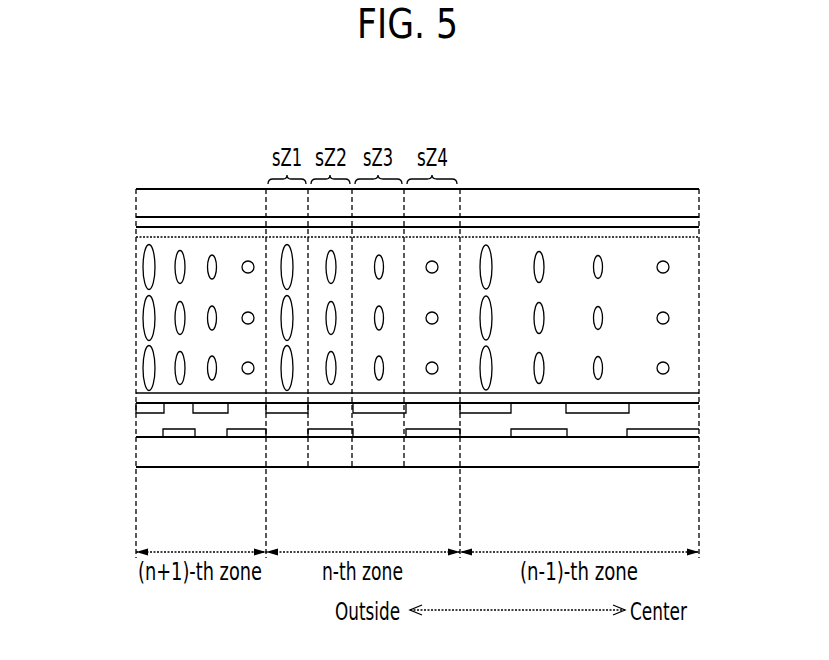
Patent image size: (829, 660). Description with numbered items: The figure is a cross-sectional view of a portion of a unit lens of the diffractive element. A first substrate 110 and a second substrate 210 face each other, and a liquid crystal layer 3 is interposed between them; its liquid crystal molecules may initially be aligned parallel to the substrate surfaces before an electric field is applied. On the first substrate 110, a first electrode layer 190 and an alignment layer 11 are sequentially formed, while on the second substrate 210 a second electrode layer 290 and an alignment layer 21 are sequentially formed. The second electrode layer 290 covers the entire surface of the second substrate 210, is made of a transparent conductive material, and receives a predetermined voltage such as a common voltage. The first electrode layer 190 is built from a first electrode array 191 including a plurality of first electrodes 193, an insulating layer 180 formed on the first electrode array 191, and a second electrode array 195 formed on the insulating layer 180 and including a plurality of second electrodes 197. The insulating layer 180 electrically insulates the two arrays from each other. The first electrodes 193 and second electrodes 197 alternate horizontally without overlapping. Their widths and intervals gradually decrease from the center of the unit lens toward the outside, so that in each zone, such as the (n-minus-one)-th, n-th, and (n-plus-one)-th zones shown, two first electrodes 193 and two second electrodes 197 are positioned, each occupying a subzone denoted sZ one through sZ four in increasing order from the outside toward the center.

The second substrate 210 is at (177, 200).
The second electrode layer 290 is at (136, 222).
The alignment layer 21 is at (136, 233).
The liquid crystal layer 3 is at (712, 238).
The alignment layer 11 is at (137, 398).
The first electrode layer 190 is at (708, 403).
The second electrode array 195 is at (121, 408).
The second electrodes 197 is at (582, 412).
The first electrode array 191 is at (121, 434).
The first electrodes 193 is at (427, 433).
The insulating layer 180 is at (603, 427).
The first substrate 110 is at (193, 459).